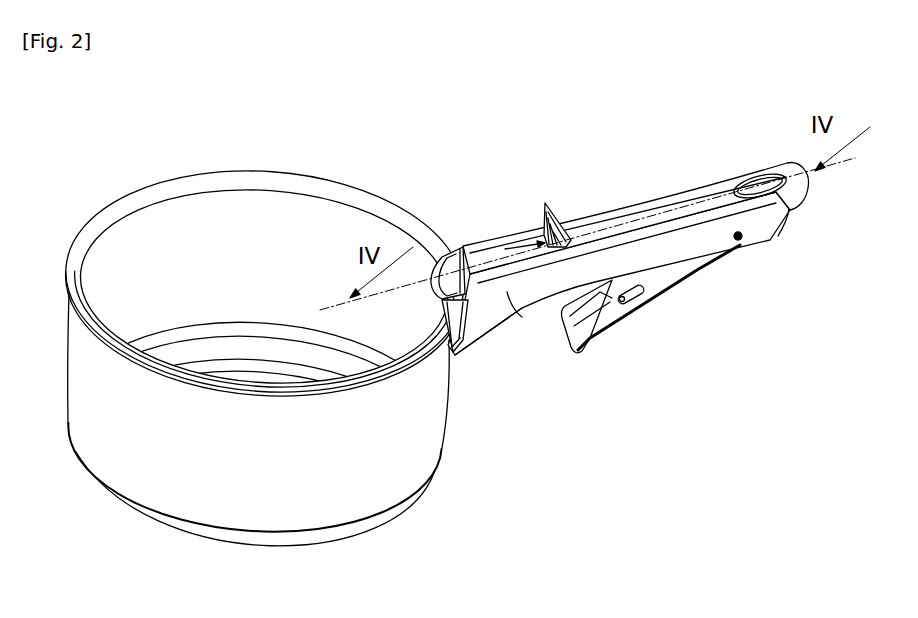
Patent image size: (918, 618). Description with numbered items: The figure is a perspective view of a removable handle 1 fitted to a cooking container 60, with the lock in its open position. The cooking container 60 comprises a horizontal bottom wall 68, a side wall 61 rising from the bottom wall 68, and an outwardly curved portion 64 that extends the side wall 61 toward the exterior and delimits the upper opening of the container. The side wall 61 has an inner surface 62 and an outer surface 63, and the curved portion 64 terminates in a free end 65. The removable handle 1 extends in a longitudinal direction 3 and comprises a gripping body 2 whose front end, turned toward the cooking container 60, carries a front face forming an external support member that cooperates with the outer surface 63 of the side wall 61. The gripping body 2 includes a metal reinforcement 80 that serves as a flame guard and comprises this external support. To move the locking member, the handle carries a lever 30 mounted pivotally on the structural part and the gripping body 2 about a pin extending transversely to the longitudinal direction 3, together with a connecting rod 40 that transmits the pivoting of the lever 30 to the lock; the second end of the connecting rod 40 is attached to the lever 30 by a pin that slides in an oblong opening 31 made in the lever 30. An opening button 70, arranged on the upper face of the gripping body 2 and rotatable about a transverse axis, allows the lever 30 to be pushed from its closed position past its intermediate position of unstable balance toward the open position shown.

The removable handle 1 is at (620, 262).
The gripping body 2 is at (663, 247).
The longitudinal direction 3 is at (694, 201).
The lever 30 is at (598, 317).
The oblong opening 31 is at (640, 298).
The connecting rod 40 is at (625, 304).
The cooking container 60 is at (287, 336).
The side wall 61 is at (447, 420).
The inner surface 62 is at (303, 220).
The outer surface 63 is at (452, 370).
The curved portion 64 is at (77, 260).
The free end 65 is at (443, 252).
The bottom wall 68 is at (272, 543).
The opening button 70 is at (562, 210).
The metal reinforcement 80 is at (488, 318).